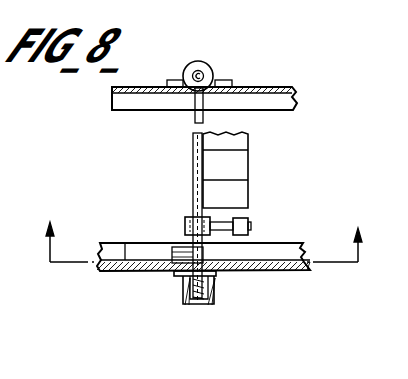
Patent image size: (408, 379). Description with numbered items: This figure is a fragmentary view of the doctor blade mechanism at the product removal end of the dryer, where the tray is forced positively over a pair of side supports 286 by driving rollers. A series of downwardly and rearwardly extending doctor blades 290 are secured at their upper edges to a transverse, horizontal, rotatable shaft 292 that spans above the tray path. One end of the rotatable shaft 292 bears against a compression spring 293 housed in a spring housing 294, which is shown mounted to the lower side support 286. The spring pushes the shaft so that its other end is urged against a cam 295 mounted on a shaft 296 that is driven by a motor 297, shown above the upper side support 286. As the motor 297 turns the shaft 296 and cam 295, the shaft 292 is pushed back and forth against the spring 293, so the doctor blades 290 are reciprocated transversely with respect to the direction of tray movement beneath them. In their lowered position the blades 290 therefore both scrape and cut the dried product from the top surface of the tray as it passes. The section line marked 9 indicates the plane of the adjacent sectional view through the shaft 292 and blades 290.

The side supports 286 is at (297, 107).
The doctor blades 290 is at (250, 136).
The rotatable shaft 292 is at (193, 210).
The compression spring 293 is at (182, 291).
The spring housing 294 is at (212, 292).
The cam 295 is at (205, 80).
The shaft 296 is at (205, 70).
The motor 297 is at (208, 70).
The section line 9- 9 is at (204, 230).